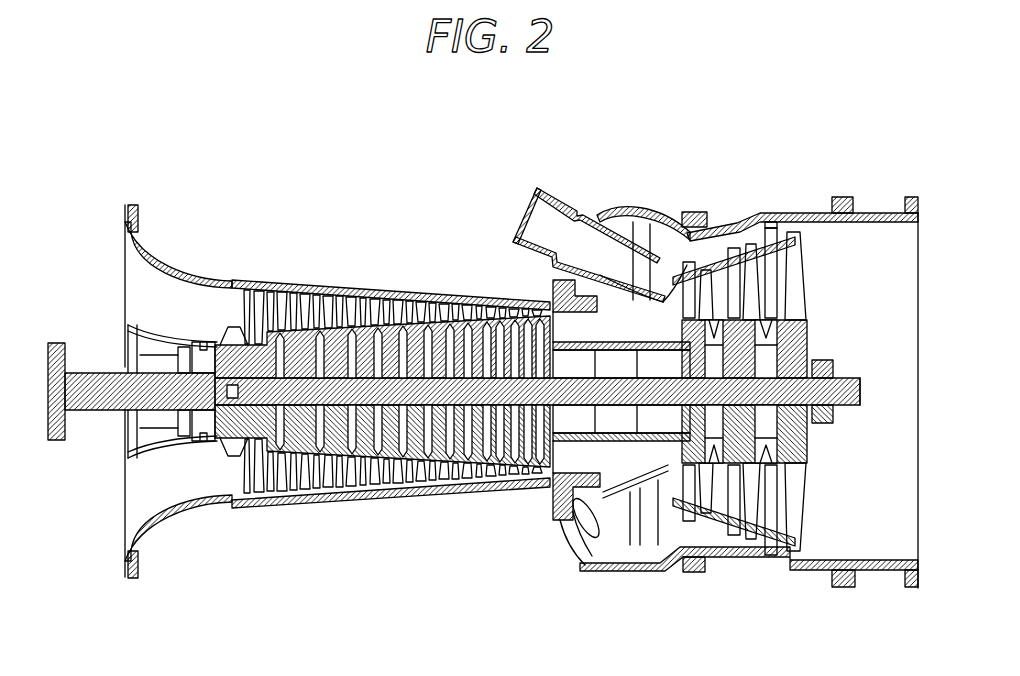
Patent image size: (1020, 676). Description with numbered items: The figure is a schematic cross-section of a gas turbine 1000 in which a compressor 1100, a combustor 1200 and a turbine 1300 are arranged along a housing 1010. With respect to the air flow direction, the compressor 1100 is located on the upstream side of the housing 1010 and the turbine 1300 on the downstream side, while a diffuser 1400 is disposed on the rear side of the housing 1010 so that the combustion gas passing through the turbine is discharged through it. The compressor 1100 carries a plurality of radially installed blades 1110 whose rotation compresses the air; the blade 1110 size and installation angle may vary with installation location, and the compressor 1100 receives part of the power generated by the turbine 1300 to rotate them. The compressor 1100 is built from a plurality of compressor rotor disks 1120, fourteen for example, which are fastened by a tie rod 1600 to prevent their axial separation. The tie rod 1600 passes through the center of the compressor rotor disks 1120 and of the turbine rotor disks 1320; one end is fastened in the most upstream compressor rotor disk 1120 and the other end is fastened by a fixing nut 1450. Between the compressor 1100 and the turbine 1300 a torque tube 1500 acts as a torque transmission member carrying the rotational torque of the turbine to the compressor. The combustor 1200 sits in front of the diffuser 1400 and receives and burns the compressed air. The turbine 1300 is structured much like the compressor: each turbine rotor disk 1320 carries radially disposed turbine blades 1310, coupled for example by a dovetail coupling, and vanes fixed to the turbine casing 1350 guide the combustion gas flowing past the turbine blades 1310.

The gas turbine 1000 is at (174, 100).
The housing 1010 is at (380, 273).
The compressor 1100 is at (191, 453).
The blade 1110 is at (262, 340).
The compressor rotor disk 1120 is at (270, 363).
The combustor 1200 is at (546, 181).
The turbine 1300 is at (669, 560).
The turbine blade 1310 is at (752, 290).
The turbine rotor disk 1320 is at (766, 292).
The turbine casing 1350 is at (642, 215).
The diffuser 1400 is at (881, 200).
The fixing nut 1450 is at (822, 360).
The torque tube 1500 is at (577, 338).
The tie rod 1600 is at (224, 392).